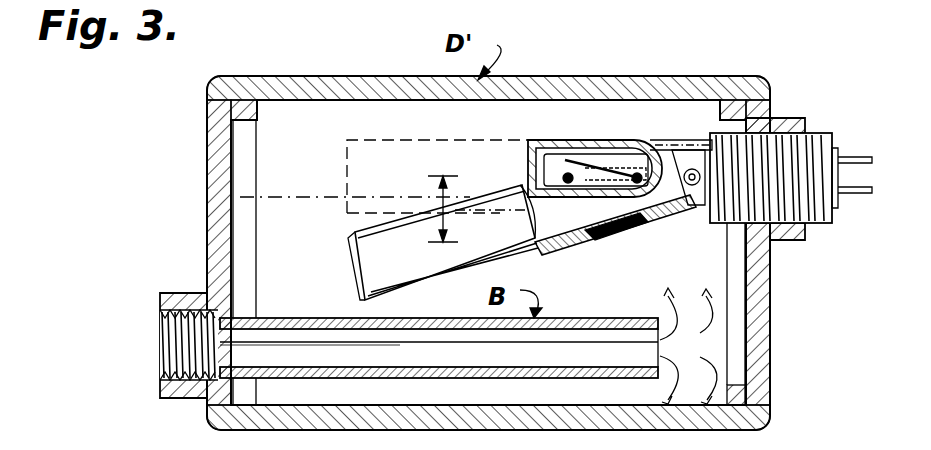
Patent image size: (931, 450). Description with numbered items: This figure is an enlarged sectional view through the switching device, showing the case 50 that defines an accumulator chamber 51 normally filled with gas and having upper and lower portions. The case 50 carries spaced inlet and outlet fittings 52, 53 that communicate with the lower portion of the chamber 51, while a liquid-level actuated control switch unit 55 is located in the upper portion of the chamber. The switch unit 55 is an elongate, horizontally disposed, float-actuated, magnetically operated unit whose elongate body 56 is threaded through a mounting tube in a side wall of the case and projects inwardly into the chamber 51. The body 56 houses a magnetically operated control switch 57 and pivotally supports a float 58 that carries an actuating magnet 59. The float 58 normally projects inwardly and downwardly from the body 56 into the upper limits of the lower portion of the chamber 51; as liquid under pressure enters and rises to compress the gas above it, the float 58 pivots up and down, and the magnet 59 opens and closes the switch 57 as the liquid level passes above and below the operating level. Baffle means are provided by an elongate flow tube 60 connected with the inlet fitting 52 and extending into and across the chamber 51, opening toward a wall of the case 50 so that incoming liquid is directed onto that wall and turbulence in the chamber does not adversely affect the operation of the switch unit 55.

The case 50 is at (207, 125).
The accumulator chamber 51 is at (275, 134).
The inlet fitting 52 is at (188, 293).
The outlet fitting 53 is at (782, 118).
The control switch unit 55 is at (533, 140).
The elongate body 56 is at (670, 138).
The magnetically operated control switch 57 is at (612, 140).
The float 58 is at (378, 262).
The actuating magnet 59 is at (598, 242).
The flow tube 60 is at (613, 292).